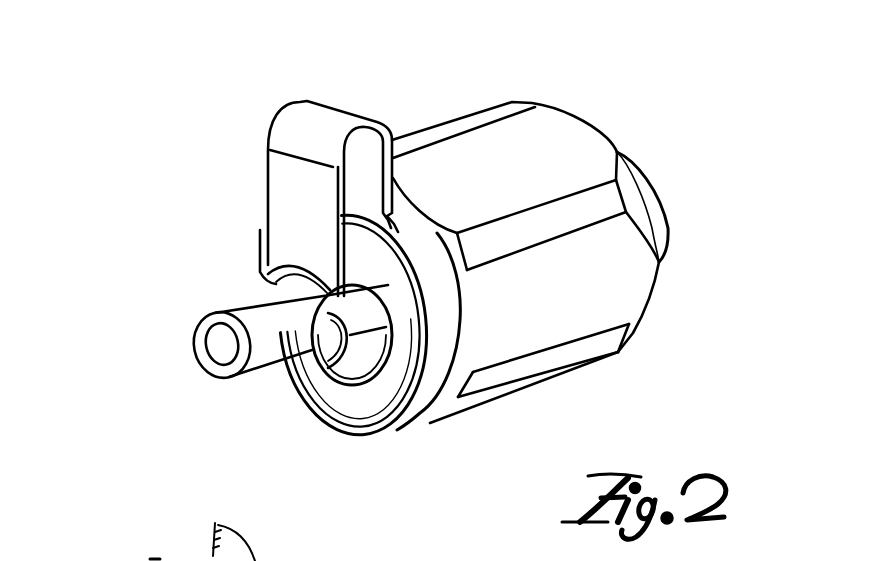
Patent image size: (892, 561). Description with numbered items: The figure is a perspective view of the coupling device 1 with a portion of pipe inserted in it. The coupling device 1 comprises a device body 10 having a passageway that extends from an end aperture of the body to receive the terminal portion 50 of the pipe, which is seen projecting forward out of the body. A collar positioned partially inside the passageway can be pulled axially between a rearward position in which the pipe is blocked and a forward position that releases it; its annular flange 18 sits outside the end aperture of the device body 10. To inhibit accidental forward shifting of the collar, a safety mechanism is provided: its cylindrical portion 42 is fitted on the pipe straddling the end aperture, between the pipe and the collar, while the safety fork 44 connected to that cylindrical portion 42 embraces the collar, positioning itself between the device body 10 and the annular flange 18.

The coupling device 1 is at (183, 165).
The device body 10 is at (552, 162).
The annular flange 18 is at (402, 302).
The cylindrical portion 42 is at (383, 340).
The safety fork 44 is at (380, 122).
The terminal portion 50 is at (263, 348).